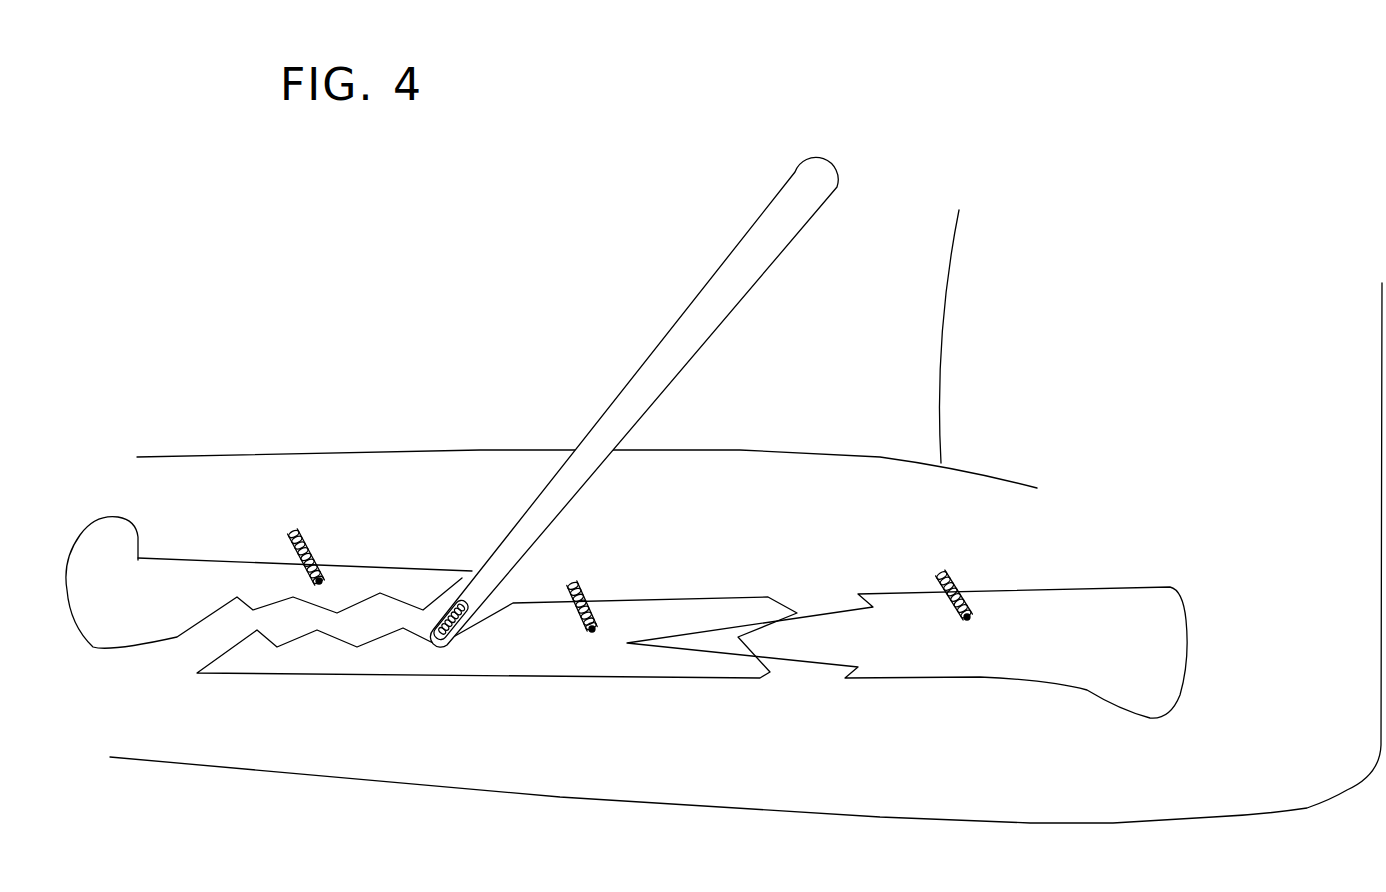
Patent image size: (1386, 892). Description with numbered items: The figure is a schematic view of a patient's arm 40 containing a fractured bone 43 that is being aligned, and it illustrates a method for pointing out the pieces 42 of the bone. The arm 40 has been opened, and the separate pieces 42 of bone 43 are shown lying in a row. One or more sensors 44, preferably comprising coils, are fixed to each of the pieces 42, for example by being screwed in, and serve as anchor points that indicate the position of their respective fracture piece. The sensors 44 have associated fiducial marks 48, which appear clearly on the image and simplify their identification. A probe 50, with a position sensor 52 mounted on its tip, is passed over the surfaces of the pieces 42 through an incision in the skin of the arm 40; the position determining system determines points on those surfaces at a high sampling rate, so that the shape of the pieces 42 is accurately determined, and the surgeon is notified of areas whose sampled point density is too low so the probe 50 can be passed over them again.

The arm 40 is at (385, 450).
The pieces 42 is at (466, 569).
The fractured bone 43 is at (767, 507).
The sensors 44 is at (300, 535).
The fiducial marks 48 is at (319, 581).
The probe 50 is at (816, 175).
The position sensor 52 is at (432, 640).